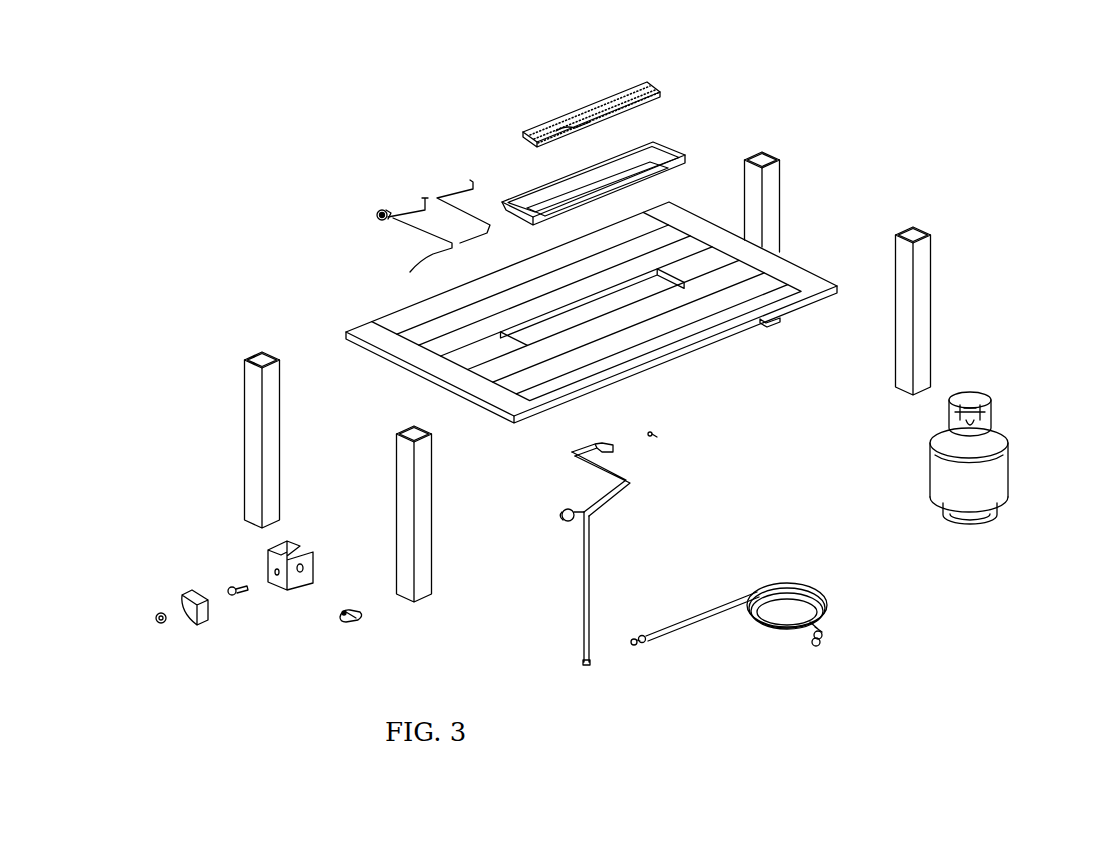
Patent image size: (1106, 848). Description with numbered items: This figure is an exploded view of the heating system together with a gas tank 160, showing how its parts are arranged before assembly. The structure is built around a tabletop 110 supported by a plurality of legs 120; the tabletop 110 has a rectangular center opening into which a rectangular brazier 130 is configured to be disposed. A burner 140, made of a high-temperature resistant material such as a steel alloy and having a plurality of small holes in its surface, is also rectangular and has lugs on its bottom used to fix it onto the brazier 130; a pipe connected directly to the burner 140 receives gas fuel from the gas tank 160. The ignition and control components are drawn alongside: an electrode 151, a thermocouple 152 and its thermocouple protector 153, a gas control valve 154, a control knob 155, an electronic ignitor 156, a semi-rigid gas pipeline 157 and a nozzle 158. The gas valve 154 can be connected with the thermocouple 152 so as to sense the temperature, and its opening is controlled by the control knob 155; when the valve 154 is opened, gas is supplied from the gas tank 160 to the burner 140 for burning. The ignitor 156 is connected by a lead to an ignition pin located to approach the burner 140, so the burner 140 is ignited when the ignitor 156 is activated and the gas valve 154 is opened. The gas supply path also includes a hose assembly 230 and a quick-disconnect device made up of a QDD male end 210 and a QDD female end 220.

The tabletop 110 is at (677, 362).
The legs 120 is at (932, 253).
The brazier 130 is at (660, 143).
The burner 140 is at (653, 82).
The electrode 151 is at (470, 180).
The thermocouple 152 is at (425, 198).
The thermocouple protector 153 is at (378, 218).
The gas control valve 154 is at (228, 588).
The control knob 155 is at (160, 617).
The electronic ignitor 156 is at (340, 622).
The semi-rigid gas pipeline 157 is at (617, 495).
The nozzle 158 is at (655, 435).
The gas tank 160 is at (1003, 438).
The QDD male end 210 is at (633, 643).
The QDD female end 220 is at (648, 637).
The hose assembly 230 is at (807, 588).